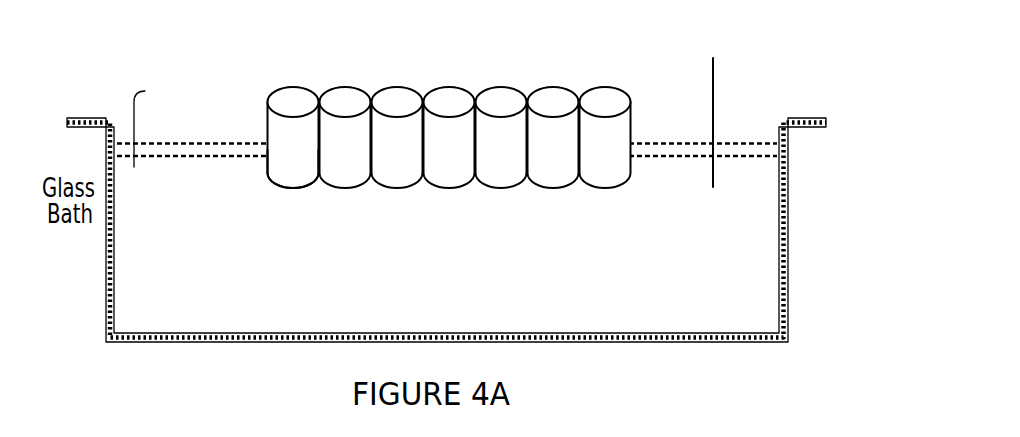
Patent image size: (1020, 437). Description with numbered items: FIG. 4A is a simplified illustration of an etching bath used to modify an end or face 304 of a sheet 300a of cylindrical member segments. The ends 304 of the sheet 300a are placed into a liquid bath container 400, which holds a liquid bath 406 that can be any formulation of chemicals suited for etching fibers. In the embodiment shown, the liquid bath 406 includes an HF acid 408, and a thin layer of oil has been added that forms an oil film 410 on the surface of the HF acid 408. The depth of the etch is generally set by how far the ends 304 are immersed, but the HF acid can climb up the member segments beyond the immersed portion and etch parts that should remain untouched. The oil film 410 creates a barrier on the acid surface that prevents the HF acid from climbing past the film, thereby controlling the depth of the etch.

The liquid bath container 400 is at (106, 258).
The liquid bath 406 is at (665, 138).
The sheet of cylindrical member segments 300a is at (268, 101).
The end of sheet 304 is at (345, 186).
The HF acid 408 is at (167, 125).
The oil film 410 is at (720, 109).